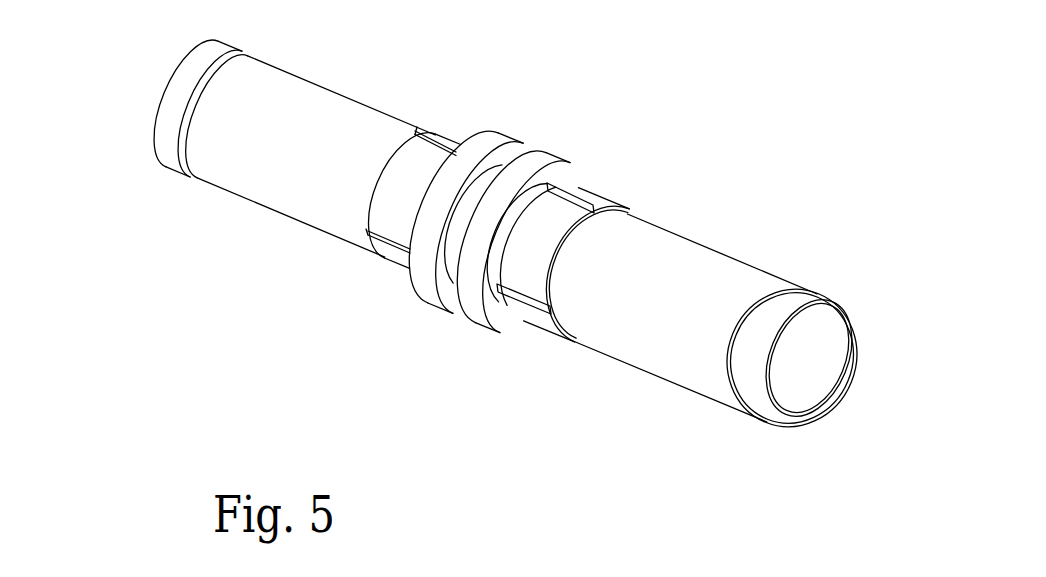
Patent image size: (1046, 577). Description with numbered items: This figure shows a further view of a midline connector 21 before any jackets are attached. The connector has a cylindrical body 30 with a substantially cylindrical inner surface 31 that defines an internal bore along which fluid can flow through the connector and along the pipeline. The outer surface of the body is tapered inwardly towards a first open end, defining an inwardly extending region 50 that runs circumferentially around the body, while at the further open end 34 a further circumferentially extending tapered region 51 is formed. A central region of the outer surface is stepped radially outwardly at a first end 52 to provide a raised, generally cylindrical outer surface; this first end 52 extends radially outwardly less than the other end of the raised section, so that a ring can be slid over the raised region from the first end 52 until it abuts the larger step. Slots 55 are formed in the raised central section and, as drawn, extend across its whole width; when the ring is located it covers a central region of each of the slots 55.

The midline connector 21 is at (178, 228).
The cylindrical body 30 is at (663, 265).
The substantially cylindrical inner surface 31 is at (797, 408).
The further open end 34 is at (868, 378).
The inwardly extending region 50 is at (162, 140).
The further circumferentially extending tapered region 51 is at (758, 418).
The first end of the raised section 52 is at (373, 257).
The slots 55 is at (437, 140).